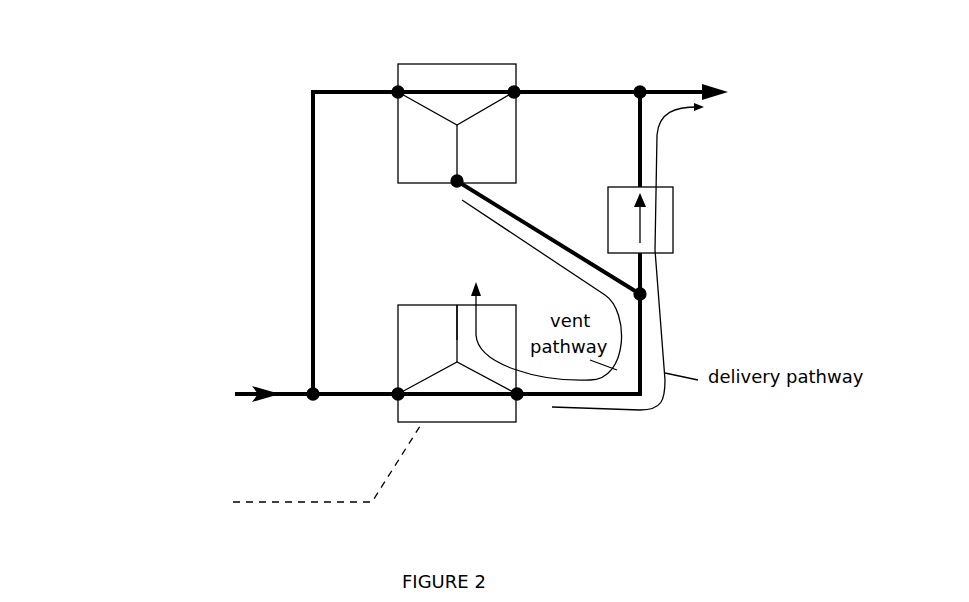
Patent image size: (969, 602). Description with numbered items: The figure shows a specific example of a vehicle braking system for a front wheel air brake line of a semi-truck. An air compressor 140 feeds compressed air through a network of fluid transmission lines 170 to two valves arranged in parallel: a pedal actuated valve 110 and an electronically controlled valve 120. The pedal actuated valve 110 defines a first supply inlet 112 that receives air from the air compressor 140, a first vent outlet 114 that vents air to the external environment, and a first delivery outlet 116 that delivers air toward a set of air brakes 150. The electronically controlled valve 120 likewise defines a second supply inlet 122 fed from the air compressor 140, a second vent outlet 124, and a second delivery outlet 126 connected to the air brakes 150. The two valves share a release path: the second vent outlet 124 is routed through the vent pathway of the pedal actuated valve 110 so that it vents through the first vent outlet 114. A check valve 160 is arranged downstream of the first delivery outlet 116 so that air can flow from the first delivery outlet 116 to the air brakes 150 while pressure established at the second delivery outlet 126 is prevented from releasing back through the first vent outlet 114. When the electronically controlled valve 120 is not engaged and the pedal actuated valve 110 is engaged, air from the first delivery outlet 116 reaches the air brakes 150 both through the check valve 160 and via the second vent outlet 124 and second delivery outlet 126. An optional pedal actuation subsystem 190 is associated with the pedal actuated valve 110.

The pedal actuated valve 110 is at (453, 422).
The first supply inlet 112 is at (396, 397).
The first vent outlet 114 is at (458, 305).
The first delivery outlet 116 is at (523, 400).
The electronically controlled valve 120 is at (443, 63).
The second supply inlet 122 is at (396, 88).
The second vent outlet 124 is at (453, 187).
The second delivery outlet 126 is at (567, 58).
The air compressor 140 is at (176, 398).
The air brakes 150 is at (784, 91).
The check valve 160 is at (665, 225).
The fluid transmission lines 170 is at (313, 335).
The pedal actuation subsystem 190 is at (249, 478).